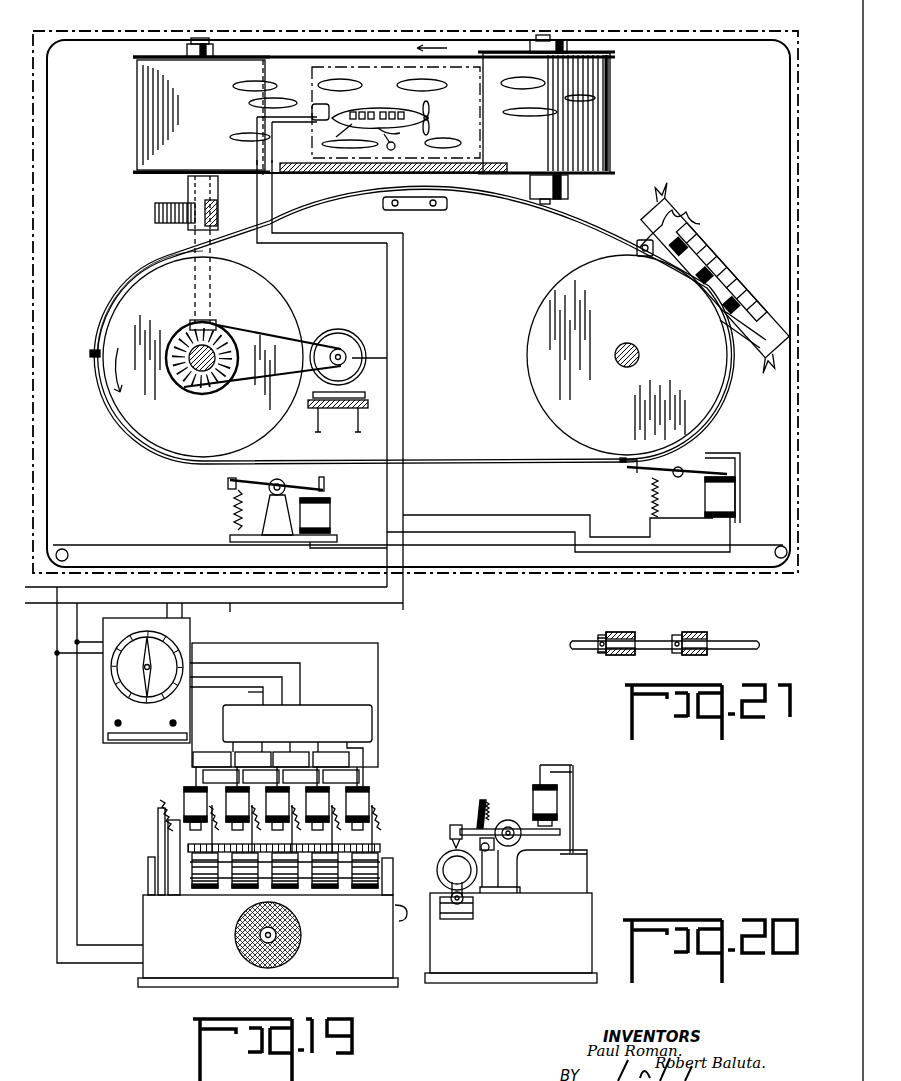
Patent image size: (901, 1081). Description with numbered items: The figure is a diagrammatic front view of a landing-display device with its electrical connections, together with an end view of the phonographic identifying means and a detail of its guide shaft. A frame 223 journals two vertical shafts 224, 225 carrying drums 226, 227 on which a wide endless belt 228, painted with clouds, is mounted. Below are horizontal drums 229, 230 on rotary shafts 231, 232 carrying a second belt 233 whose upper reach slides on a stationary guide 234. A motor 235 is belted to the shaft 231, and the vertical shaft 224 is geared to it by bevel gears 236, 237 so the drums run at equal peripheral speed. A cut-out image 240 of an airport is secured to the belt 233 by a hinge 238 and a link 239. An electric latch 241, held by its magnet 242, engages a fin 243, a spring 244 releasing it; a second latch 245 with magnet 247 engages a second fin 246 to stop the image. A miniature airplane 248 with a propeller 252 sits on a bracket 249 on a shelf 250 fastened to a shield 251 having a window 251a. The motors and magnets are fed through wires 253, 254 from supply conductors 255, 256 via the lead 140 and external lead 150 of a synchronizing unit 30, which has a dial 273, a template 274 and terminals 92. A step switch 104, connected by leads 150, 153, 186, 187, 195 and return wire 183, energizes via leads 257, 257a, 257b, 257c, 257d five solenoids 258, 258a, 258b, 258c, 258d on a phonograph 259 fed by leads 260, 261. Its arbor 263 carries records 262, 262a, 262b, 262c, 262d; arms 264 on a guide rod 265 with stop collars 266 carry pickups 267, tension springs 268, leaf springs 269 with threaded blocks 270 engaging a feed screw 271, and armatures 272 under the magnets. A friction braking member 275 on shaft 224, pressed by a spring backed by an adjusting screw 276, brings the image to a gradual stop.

In FIG. 19, the synchronizing unit 30 is at (151, 691).
In FIG. 19, the terminals 92 is at (121, 723).
In FIG. 19, the step switch 104 is at (346, 693).
In FIG. 19, the lead 140 is at (140, 590).
In FIG. 19, the external lead 150 is at (230, 603).
In FIG. 19, the lead 153 is at (298, 748).
In FIG. 19, the return wire 183 is at (380, 665).
In FIG. 19, the lead 186 is at (275, 692).
In FIG. 19, the lead 187 is at (292, 677).
In FIG. 19, the lead 195 is at (302, 666).
In FIG. 19, the frame 223 is at (488, 43).
In FIG. 19, the vertical shaft 224 is at (197, 236).
In FIG. 19, the vertical shaft 225 is at (568, 197).
In FIG. 19, the drum 226 is at (160, 178).
In FIG. 19, the drum 227 is at (613, 50).
In FIG. 19, the endless belt 228 is at (285, 63).
In FIG. 19, the horizontal drum 229 is at (148, 425).
In FIG. 19, the horizontal drum 230 is at (705, 396).
In FIG. 19, the rotary shaft 231 is at (190, 387).
In FIG. 19, the rotary shaft 232 is at (640, 352).
In FIG. 19, the second belt 233 is at (485, 458).
In FIG. 19, the stationary guide 234 is at (481, 197).
In FIG. 19, the motor 235 is at (341, 333).
In FIG. 19, the bevel gear 236 is at (185, 330).
In FIG. 19, the bevel gear 237 is at (232, 340).
In FIG. 19, the hinge 238 is at (642, 240).
In FIG. 19, the link 239 is at (735, 345).
In FIG. 19, the image of airport station 240 is at (738, 256).
In FIG. 19, the electric latch 241 is at (670, 465).
In FIG. 19, the magnet 242 is at (727, 493).
In FIG. 19, the fin 243 is at (627, 472).
In FIG. 19, the spring 244 is at (655, 500).
In FIG. 19, the second electric latch 245 is at (325, 487).
In FIG. 19, the second fin 246 is at (95, 350).
In FIG. 19, the magnet 247 is at (322, 516).
In FIG. 19, the miniature airplane 248 is at (378, 108).
In FIG. 19, the bracket 249 is at (287, 157).
In FIG. 19, the shelf 250 is at (508, 162).
In FIG. 19, the front wall or shield 251 is at (583, 33).
In FIG. 19, the window 251a is at (350, 67).
In FIG. 19, the propeller 252 is at (432, 113).
In FIG. 19, the wire 253 is at (386, 268).
In FIG. 19, the wire 254 is at (405, 286).
In FIG. 19, the current supply conductor 255 is at (335, 588).
In FIG. 19, the second supply conductor 256 is at (55, 603).
In FIG. 19, the lead 257 is at (193, 760).
In FIG. 19, the lead 257a is at (208, 760).
In FIG. 19, the lead 257b is at (250, 760).
In FIG. 19, the lead 257c is at (287, 760).
In FIG. 19, the lead 257d is at (328, 760).
In FIG. 19, the solenoid 258 is at (186, 801).
In FIG. 19, the solenoid 258a is at (221, 776).
In FIG. 19, the solenoid 258b is at (261, 776).
In FIG. 19, the solenoid 258c is at (301, 776).
In FIG. 19, the solenoid 258d is at (341, 776).
In FIG. 20, the solenoid 258d is at (555, 796).
In FIG. 19, the phonograph 259 is at (375, 968).
In FIG. 19, the lead 260 is at (78, 830).
In FIG. 19, the lead 261 is at (57, 880).
In FIG. 19, the cylindrical record 262 is at (205, 896).
In FIG. 19, the cylindrical record 262a is at (233, 895).
In FIG. 19, the cylindrical record 262b is at (297, 893).
In FIG. 19, the cylindrical record 262c is at (335, 895).
In FIG. 19, the cylindrical record 262d is at (375, 896).
In FIG. 19, the arbor 263 is at (198, 912).
In FIG. 20, the arm 264 is at (500, 820).
In FIG. 21, the arm 264 is at (698, 632).
In FIG. 19, the longitudinal guide rod 265 is at (385, 830).
In FIG. 20, the longitudinal guide rod 265 is at (509, 821).
In FIG. 21, the longitudinal guide rod 265 is at (740, 641).
In FIG. 21, the stop collar 266 is at (677, 633).
In FIG. 19, the pickup 267 is at (360, 826).
In FIG. 20, the pickup 267 is at (456, 824).
In FIG. 19, the tension spring 268 is at (356, 813).
In FIG. 20, the tension spring 268 is at (482, 802).
In FIG. 20, the leaf spring 269 is at (494, 849).
In FIG. 20, the threaded block 270 is at (499, 889).
In FIG. 19, the feed screw 271 is at (385, 846).
In FIG. 20, the feed screw 271 is at (470, 915).
In FIG. 19, the armature 272 is at (398, 801).
In FIG. 20, the armature 272 is at (565, 831).
In FIG. 19, the dial 273 is at (118, 681).
In FIG. 19, the template 274 is at (132, 747).
In FIG. 19, the friction braking member 275 is at (217, 213).
In FIG. 19, the coil 276 is at (155, 219).